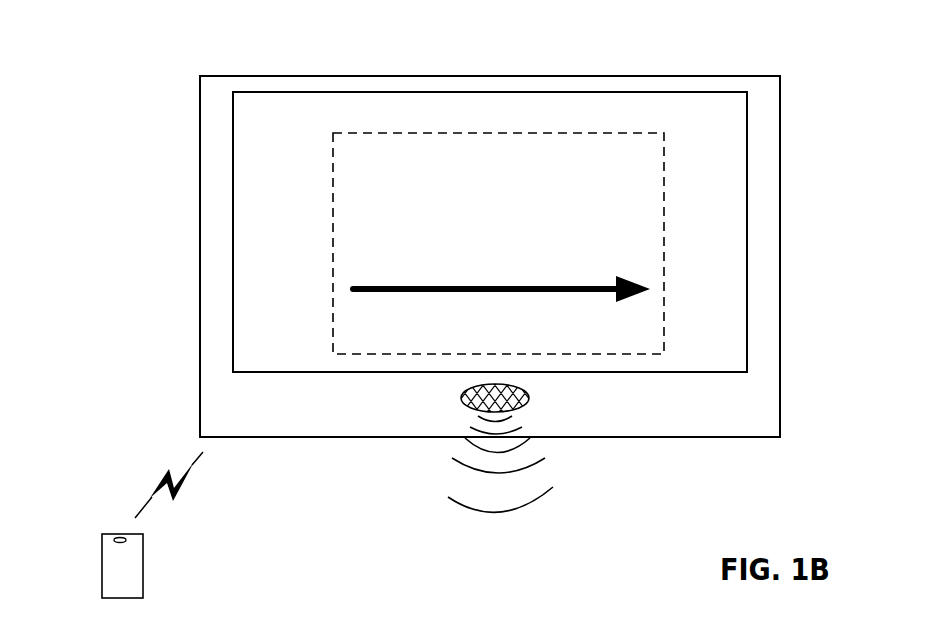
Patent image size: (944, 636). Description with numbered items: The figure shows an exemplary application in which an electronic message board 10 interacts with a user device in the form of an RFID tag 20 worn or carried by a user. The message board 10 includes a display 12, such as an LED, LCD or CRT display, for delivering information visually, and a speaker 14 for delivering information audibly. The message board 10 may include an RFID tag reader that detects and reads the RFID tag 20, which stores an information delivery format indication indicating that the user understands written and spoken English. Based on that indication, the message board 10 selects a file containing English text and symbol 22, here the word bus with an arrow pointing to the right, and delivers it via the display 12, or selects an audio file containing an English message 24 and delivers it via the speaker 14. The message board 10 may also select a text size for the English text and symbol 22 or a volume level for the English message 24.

The electronic message board 10 is at (161, 151).
The display 12 is at (267, 322).
The speaker 14 is at (521, 407).
The RFID tag 20 is at (102, 560).
The English text and symbol 22 is at (549, 115).
The English message 24 is at (455, 487).